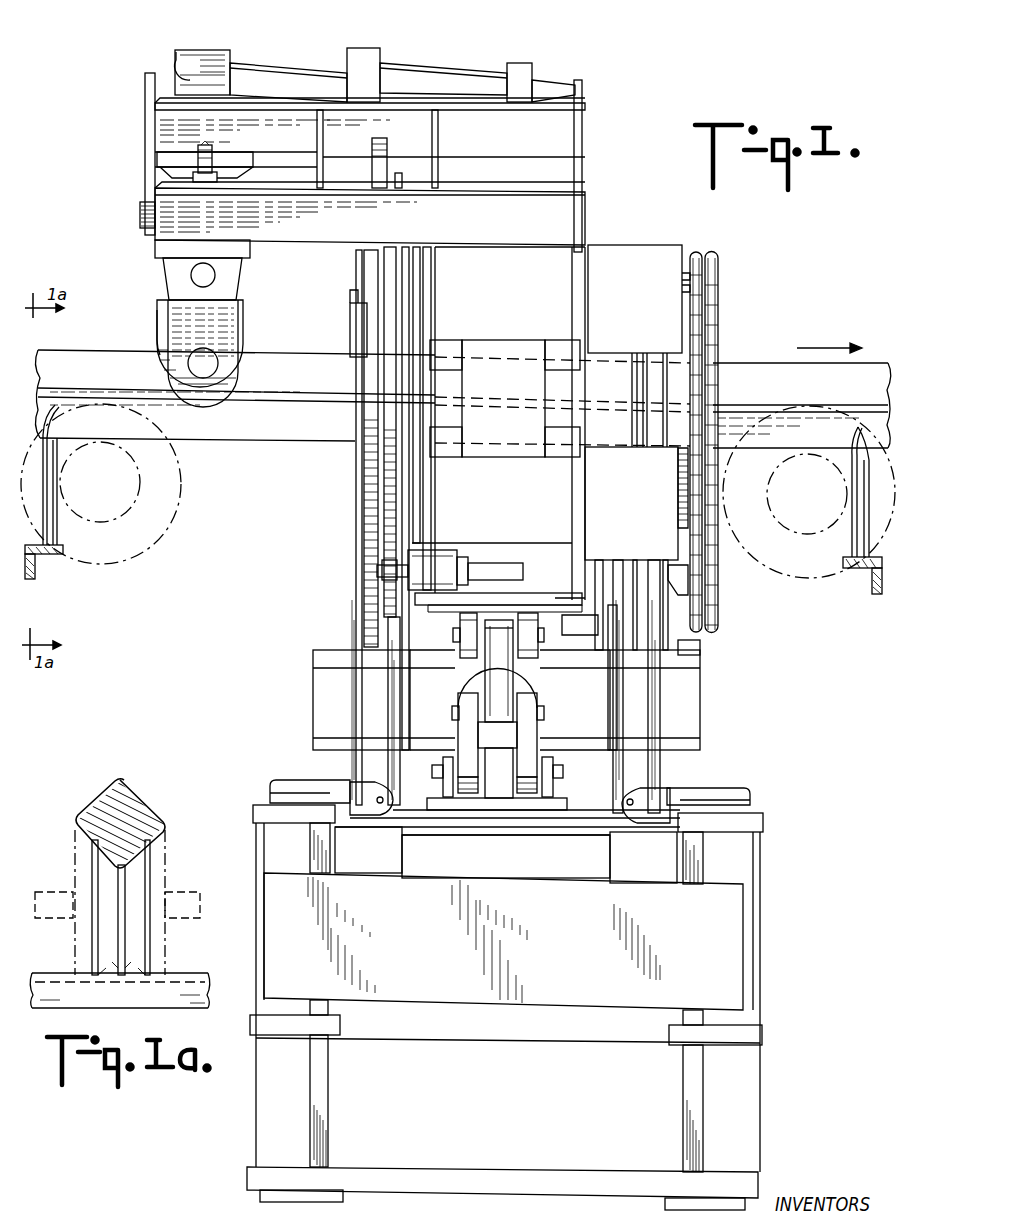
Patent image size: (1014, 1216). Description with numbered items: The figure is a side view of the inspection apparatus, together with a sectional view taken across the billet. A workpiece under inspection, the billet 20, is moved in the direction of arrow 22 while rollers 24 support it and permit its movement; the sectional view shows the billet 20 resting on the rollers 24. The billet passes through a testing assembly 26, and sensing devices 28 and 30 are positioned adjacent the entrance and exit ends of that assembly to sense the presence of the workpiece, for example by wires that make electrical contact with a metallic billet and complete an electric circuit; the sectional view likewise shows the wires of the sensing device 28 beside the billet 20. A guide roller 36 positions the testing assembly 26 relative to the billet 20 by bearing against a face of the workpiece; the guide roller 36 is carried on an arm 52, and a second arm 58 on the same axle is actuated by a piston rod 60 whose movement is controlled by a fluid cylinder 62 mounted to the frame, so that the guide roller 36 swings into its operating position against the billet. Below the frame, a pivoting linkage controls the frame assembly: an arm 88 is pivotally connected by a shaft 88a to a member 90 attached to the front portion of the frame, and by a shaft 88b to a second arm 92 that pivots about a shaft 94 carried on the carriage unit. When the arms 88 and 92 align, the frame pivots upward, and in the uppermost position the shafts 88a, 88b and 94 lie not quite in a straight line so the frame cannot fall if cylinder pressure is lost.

In FIG. 1, the billet 20 is at (743, 372).
In FIG. 1A, the billet 20 is at (125, 802).
In FIG. 1, the arrow 22 is at (824, 346).
In FIG. 1, the rollers 24 is at (182, 506).
In FIG. 1A, the rollers 24 is at (166, 944).
In FIG. 1, the testing assembly 26 is at (670, 230).
In FIG. 1, the sensing device 28 is at (56, 522).
In FIG. 1A, the sensing device 28 is at (148, 878).
In FIG. 1, the sensing device 30 is at (853, 535).
In FIG. 1, the guide roller 36 is at (245, 328).
In FIG. 1, the arm 52 is at (180, 316).
In FIG. 1, the second arm 58 is at (172, 62).
In FIG. 1, the piston rod 60 is at (253, 72).
In FIG. 1, the fluid cylinder 62 is at (410, 78).
In FIG. 1, the arm 88 is at (520, 680).
In FIG. 1, the shaft 88a is at (456, 640).
In FIG. 1, the shaft 88b is at (455, 710).
In FIG. 1, the member 90 is at (450, 607).
In FIG. 1, the second arm 92 is at (527, 737).
In FIG. 1, the shaft 94 is at (560, 773).